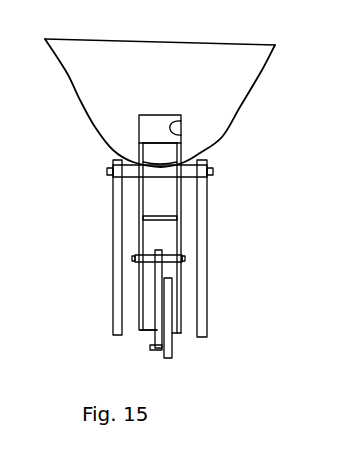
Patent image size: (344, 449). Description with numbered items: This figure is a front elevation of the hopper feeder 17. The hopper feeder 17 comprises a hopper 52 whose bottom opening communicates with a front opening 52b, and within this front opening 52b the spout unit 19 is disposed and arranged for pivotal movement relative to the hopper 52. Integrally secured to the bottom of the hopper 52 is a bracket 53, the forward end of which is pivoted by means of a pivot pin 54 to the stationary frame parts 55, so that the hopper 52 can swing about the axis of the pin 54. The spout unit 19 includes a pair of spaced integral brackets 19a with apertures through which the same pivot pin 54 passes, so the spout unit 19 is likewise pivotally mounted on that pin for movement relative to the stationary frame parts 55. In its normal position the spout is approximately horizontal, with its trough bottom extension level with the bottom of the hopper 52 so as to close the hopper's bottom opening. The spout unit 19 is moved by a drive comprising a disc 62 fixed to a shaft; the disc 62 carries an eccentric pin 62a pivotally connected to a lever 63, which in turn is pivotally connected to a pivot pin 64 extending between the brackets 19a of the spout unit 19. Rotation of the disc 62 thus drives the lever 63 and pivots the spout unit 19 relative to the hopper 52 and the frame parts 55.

The hopper feeder 17 is at (70, 96).
The spout unit 19 is at (167, 153).
The brackets 19a is at (143, 233).
The hopper 52 is at (263, 70).
The front opening 52b is at (181, 135).
The bracket 53 is at (203, 179).
The pivot pin 54 is at (213, 171).
The stationary frame parts 55 is at (113, 242).
The disc 62 is at (175, 340).
The eccentric pin 62a is at (152, 347).
The lever 63 is at (143, 332).
The pivot pin 64 is at (183, 258).